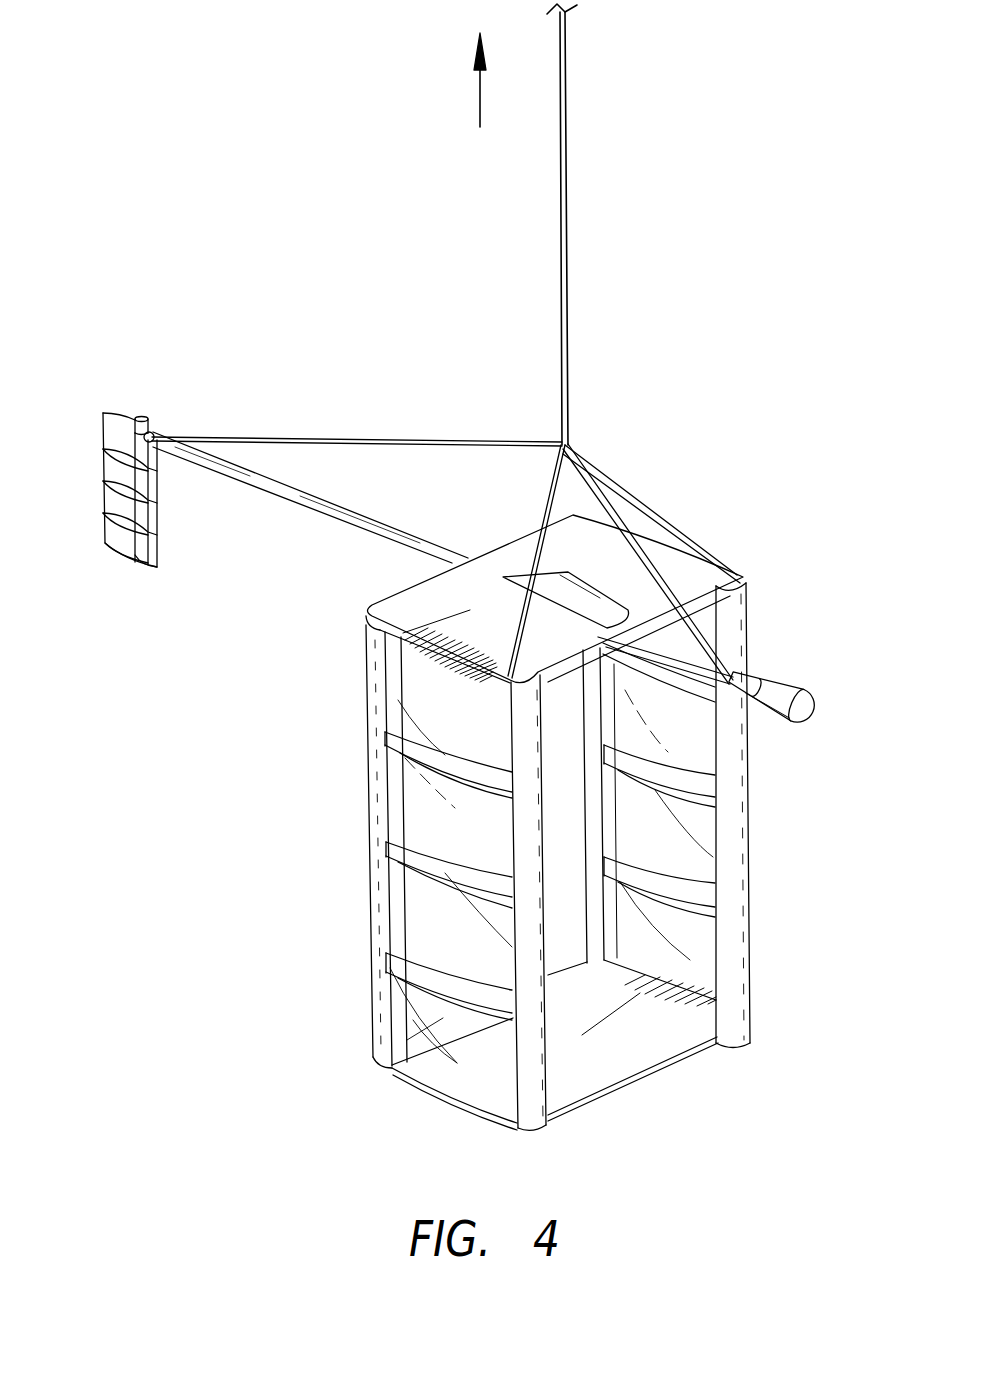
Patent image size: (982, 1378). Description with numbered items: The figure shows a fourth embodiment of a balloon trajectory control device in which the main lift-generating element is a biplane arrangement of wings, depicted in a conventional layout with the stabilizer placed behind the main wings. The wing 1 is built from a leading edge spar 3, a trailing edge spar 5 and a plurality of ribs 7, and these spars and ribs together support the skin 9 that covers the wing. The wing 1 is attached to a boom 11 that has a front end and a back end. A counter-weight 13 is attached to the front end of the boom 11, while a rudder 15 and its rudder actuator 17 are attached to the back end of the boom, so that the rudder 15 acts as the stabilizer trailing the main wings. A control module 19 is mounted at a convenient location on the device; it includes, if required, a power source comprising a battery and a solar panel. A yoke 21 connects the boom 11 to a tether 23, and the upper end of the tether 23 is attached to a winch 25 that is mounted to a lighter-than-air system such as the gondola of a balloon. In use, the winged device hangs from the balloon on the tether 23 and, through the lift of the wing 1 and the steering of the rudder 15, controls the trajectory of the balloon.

The wing 1 is at (585, 822).
The leading edge spar 3 is at (731, 780).
The trailing edge spar 5 is at (375, 770).
The ribs 7 is at (735, 990).
The skin 9 is at (425, 817).
The boom 11 is at (282, 495).
The counter-weight 13 is at (817, 693).
The rudder 15 is at (118, 507).
The rudder actuator 17 is at (143, 416).
The control module 19 is at (573, 594).
The yoke 21 is at (645, 502).
The tether 23 is at (566, 208).
The winch 25 is at (480, 113).